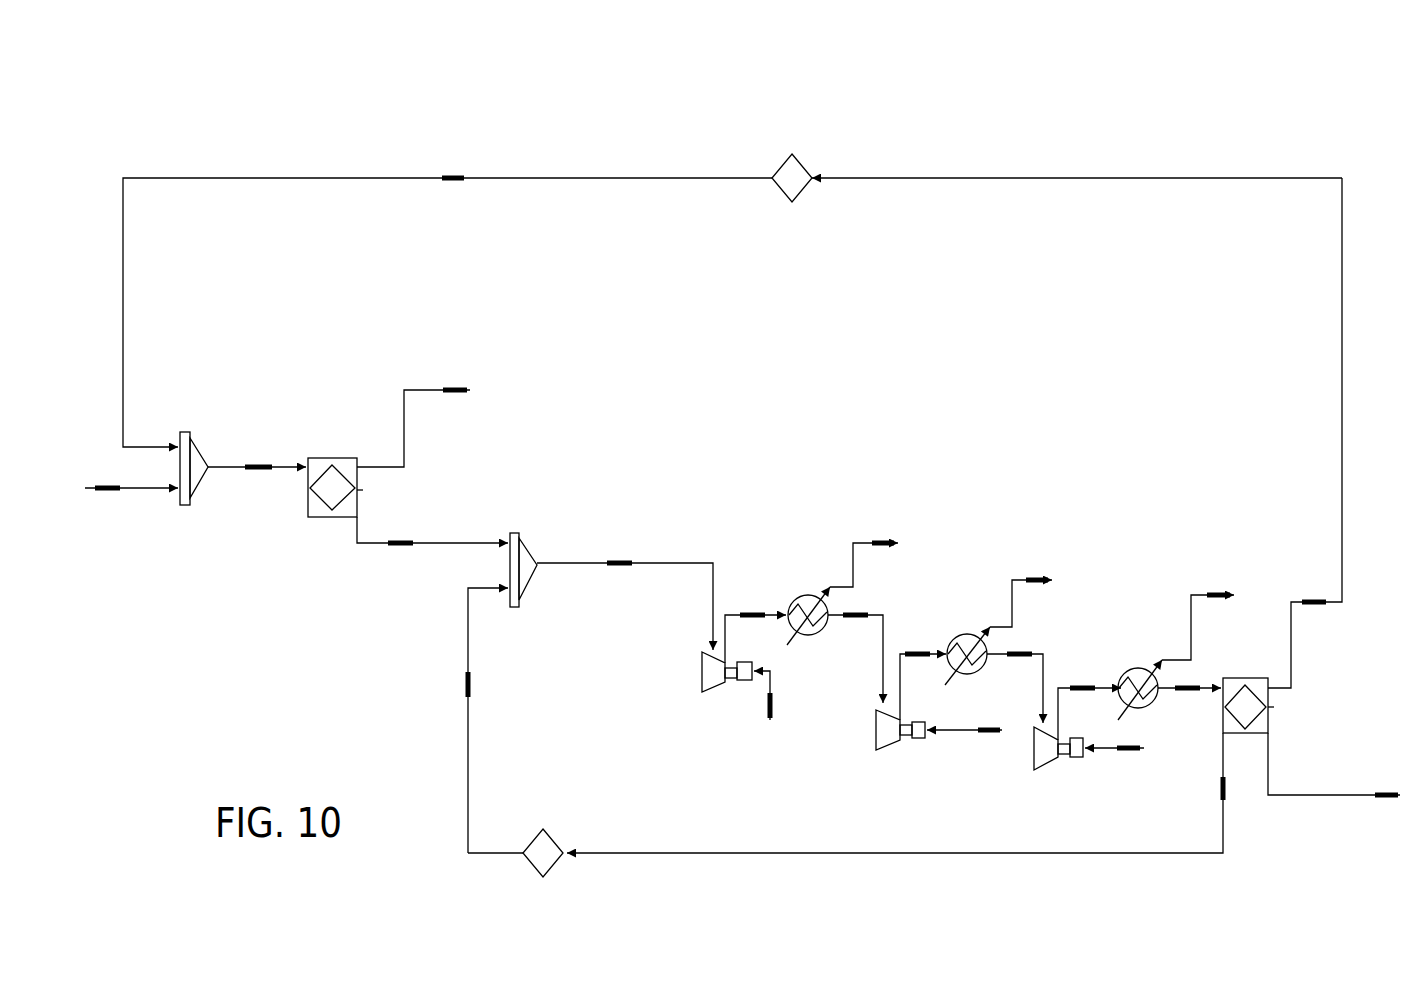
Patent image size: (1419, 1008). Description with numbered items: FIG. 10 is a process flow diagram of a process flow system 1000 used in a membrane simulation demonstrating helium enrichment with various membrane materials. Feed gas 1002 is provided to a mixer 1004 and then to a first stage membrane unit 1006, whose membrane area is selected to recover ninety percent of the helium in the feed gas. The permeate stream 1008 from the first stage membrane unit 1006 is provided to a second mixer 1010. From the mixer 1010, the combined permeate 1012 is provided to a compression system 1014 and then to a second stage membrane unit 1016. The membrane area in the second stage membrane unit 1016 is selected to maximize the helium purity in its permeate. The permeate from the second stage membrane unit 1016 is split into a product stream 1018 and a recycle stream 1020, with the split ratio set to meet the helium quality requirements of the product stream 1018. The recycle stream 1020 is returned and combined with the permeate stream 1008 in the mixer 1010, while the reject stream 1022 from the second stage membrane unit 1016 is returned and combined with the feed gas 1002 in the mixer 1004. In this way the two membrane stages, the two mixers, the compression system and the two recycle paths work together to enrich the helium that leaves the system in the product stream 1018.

The process flow system 1000 is at (345, 143).
The feed gas 1002 is at (150, 492).
The mixer 1004 is at (195, 440).
The first stage membrane unit 1006 is at (317, 519).
The permeate stream 1008 is at (442, 540).
The mixer 1010 is at (522, 536).
The permeate 1012 is at (621, 555).
The compression system 1014 is at (983, 552).
The second stage membrane unit 1016 is at (1248, 742).
The product stream 1018 is at (1325, 806).
The recycle stream 1020 is at (597, 848).
The reject stream 1022 is at (1083, 178).